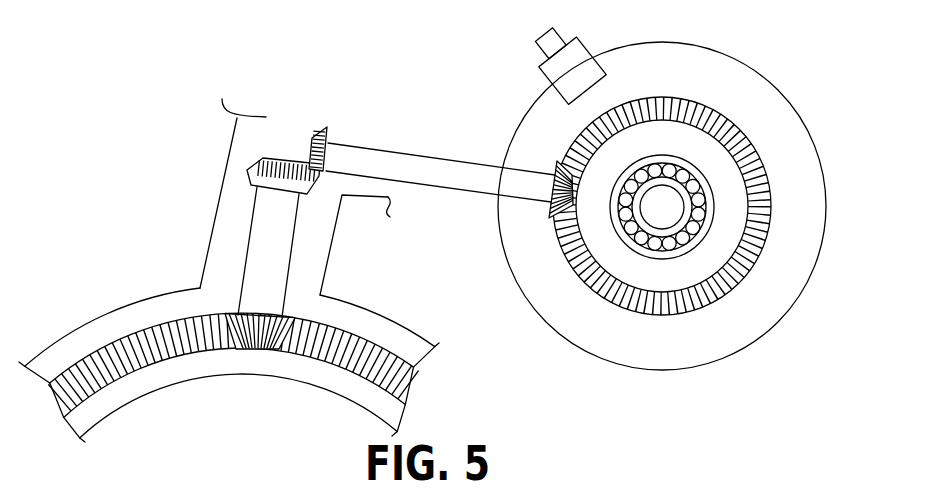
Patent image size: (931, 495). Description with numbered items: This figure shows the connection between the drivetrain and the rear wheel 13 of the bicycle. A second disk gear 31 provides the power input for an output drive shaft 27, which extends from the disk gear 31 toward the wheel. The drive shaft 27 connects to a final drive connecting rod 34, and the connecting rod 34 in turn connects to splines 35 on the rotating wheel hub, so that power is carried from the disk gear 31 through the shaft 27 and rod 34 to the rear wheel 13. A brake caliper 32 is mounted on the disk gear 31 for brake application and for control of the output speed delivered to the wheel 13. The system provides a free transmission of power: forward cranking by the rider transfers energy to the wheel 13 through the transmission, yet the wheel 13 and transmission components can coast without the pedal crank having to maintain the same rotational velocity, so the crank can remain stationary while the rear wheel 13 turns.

The rear wheel 13 is at (75, 350).
The output drive shaft 27 is at (427, 130).
The second disk gear 31 is at (805, 172).
The brake caliper 32 is at (538, 24).
The final drive connecting rod 34 is at (263, 228).
The splines 35 is at (155, 348).